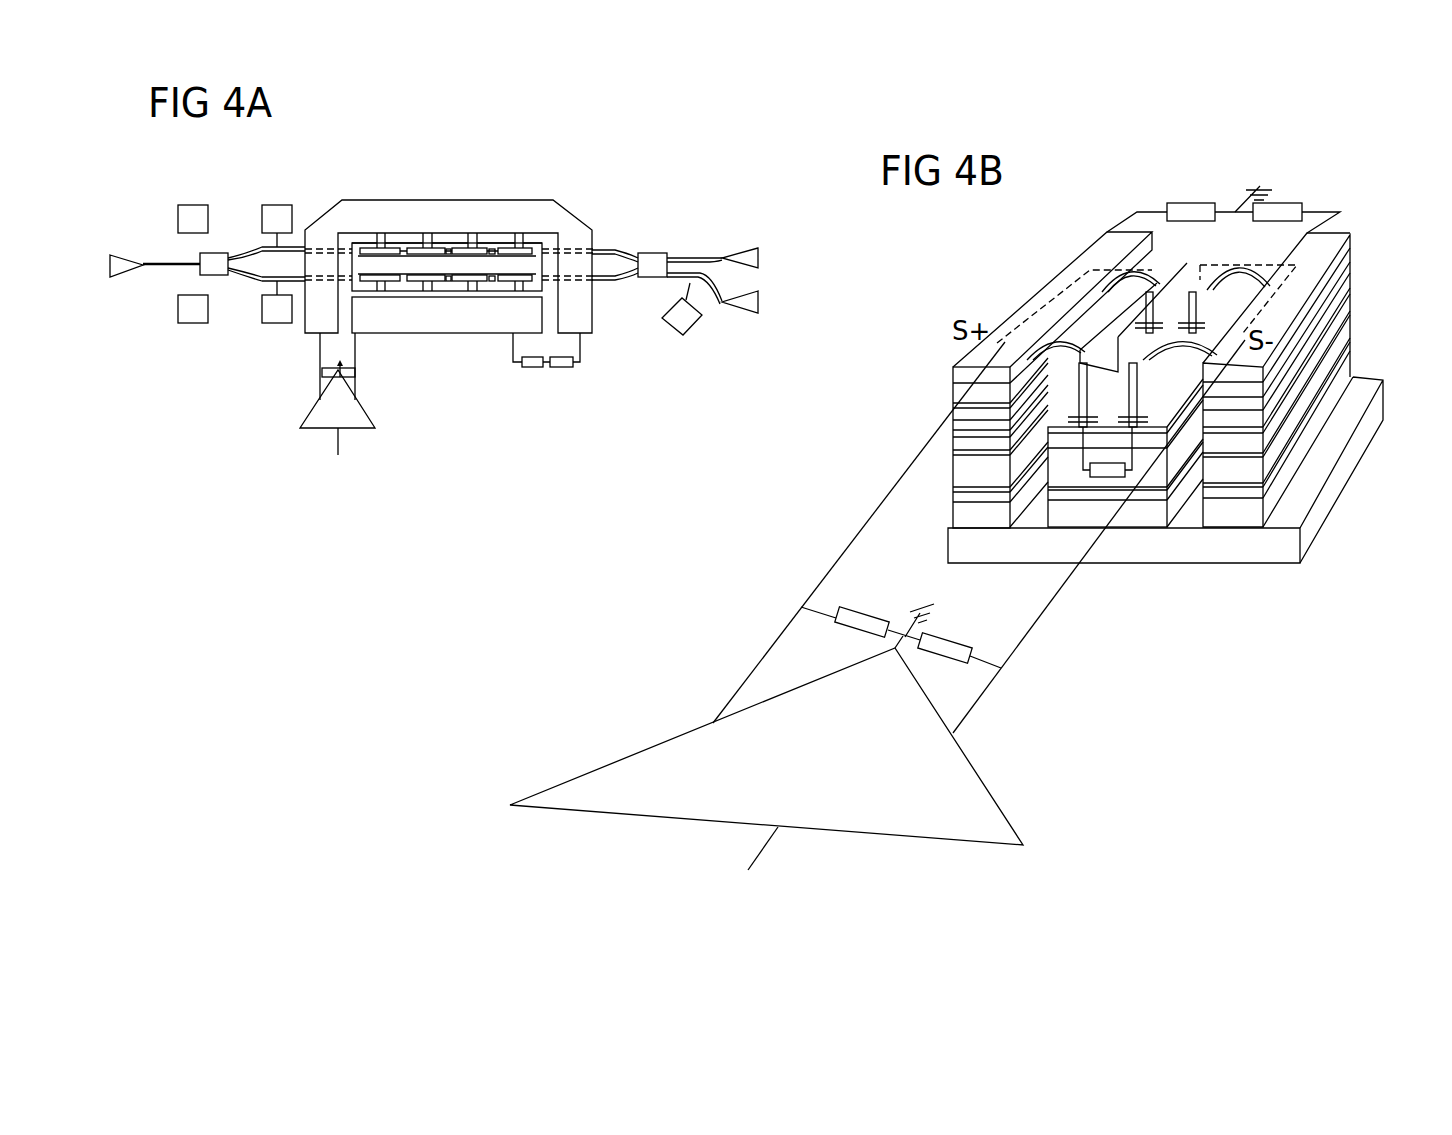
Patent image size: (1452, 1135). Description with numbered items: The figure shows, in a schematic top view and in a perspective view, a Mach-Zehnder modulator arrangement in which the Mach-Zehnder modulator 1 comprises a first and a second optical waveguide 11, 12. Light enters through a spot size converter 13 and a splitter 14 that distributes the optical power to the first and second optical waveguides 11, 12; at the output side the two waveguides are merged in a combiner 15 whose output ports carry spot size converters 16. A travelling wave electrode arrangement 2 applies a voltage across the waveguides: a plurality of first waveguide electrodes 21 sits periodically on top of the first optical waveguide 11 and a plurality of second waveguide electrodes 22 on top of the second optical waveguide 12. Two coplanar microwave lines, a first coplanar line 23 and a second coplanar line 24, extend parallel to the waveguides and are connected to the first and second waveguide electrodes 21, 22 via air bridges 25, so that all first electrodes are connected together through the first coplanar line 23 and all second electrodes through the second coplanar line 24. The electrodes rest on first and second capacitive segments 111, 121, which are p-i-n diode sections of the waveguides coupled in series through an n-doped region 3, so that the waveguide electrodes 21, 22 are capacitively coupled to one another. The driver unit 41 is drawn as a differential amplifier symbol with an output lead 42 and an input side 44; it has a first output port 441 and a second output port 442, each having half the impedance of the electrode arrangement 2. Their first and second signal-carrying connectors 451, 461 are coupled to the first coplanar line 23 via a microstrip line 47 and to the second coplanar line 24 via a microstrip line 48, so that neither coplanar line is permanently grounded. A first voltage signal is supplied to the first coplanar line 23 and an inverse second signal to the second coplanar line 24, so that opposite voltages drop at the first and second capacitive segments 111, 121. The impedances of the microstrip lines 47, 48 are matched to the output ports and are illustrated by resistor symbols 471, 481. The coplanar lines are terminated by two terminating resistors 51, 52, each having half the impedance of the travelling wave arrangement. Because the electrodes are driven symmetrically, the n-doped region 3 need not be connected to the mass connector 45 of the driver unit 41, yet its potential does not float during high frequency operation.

In FIG. 4A, the Mach-Zehnder modulator 1 is at (584, 201).
In FIG. 4A, the travelling wave electrode arrangement 2 is at (378, 186).
In FIG. 4B, the n-doped region 3 is at (1155, 485).
In FIG. 4A, the first optical waveguide 11 is at (603, 248).
In FIG. 4A, the second optical waveguide 12 is at (603, 283).
In FIG. 4A, the spot size converter 13 is at (113, 250).
In FIG. 4A, the splitter 14 is at (223, 258).
In FIG. 4A, the combiner 15 is at (656, 260).
In FIG. 4A, the spot size converters 16 is at (760, 294).
In FIG. 4A, the first waveguide electrodes 21 is at (502, 245).
In FIG. 4B, the first waveguide electrodes 21 is at (1098, 345).
In FIG. 4A, the second waveguide electrodes 22 is at (506, 280).
In FIG. 4B, the second waveguide electrodes 22 is at (1165, 340).
In FIG. 4A, the first coplanar line 23 is at (447, 222).
In FIG. 4B, the first coplanar line 23 is at (1050, 310).
In FIG. 4A, the second coplanar line 24 is at (447, 318).
In FIG. 4B, the second coplanar line 24 is at (1318, 275).
In FIG. 4A, the air bridges 25 is at (514, 248).
In FIG. 4B, the air bridges 25 is at (1253, 265).
In FIG. 4A, the driver unit 41 is at (352, 422).
In FIG. 4B, the driver unit 41 is at (1030, 825).
In FIG. 4A, the amplifier output 42 is at (346, 438).
In FIG. 4B, the amplifier output 42 is at (790, 840).
In FIG. 4A, the amplifier input 44 is at (305, 404).
In FIG. 4A, the mass connector 45 is at (356, 375).
In FIG. 4B, the mass connector 45 is at (895, 650).
In FIG. 4B, the microstrip line 47 is at (855, 520).
In FIG. 4B, the microstrip line 48 is at (1040, 616).
In FIG. 4A, the terminating resistor 51 is at (524, 368).
In FIG. 4B, the terminating resistor 51 is at (1190, 204).
In FIG. 4A, the terminating resistor 52 is at (565, 368).
In FIG. 4B, the terminating resistor 52 is at (1285, 204).
In FIG. 4B, the first capacitive segments 111 is at (1080, 412).
In FIG. 4B, the second capacitive segments 121 is at (1132, 416).
In FIG. 4A, the first output port 441 is at (300, 396).
In FIG. 4B, the first output port 441 is at (680, 703).
In FIG. 4A, the second output port 442 is at (380, 400).
In FIG. 4B, the second output port 442 is at (1005, 707).
In FIG. 4B, the first signal-carrying connector 451 is at (712, 719).
In FIG. 4B, the second signal-carrying connector 461 is at (963, 737).
In FIG. 4A, the resistor symbol 471 is at (322, 371).
In FIG. 4B, the resistor symbol 471 is at (866, 612).
In FIG. 4A, the resistor symbol 481 is at (356, 370).
In FIG. 4B, the resistor symbol 481 is at (948, 648).